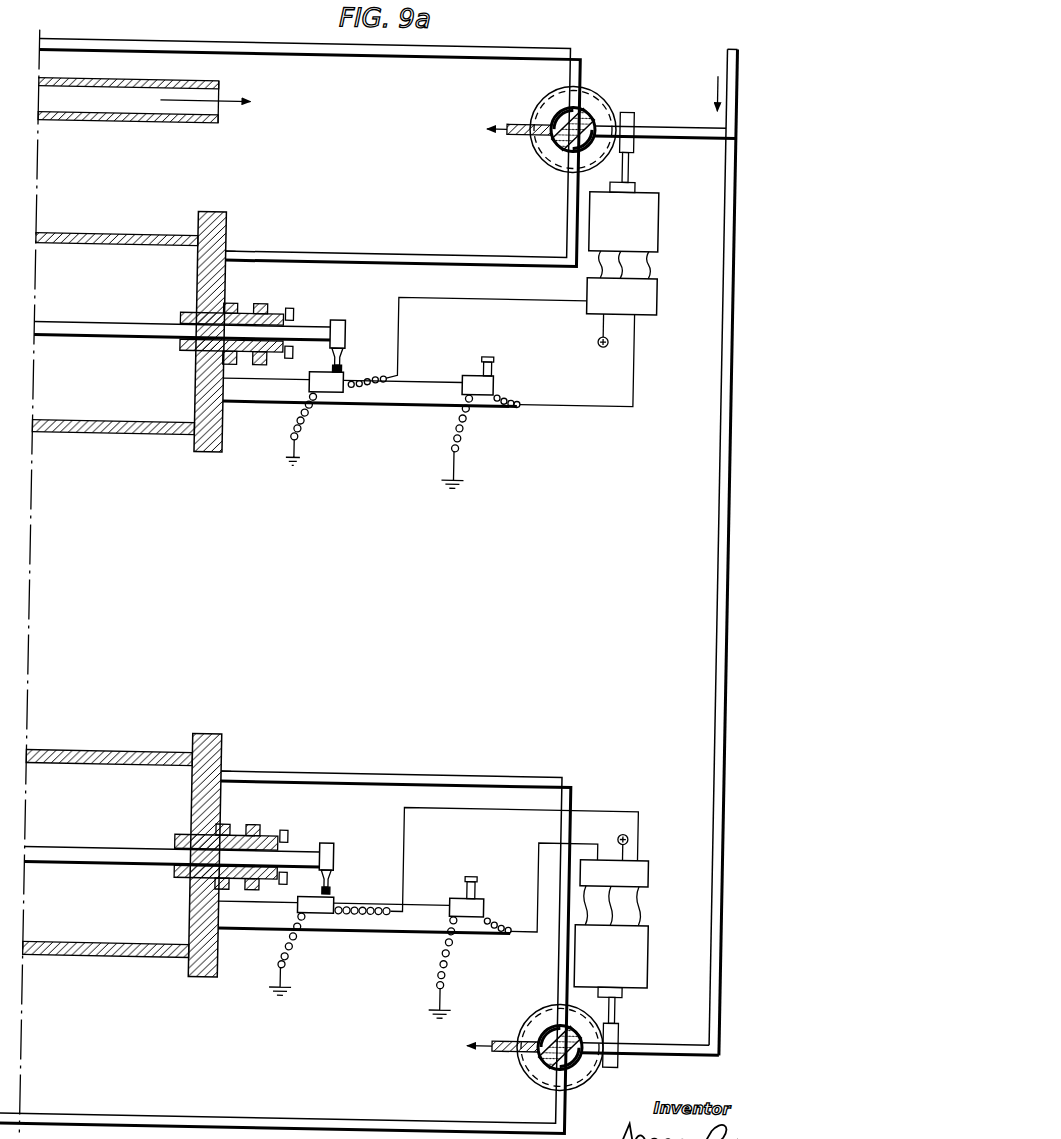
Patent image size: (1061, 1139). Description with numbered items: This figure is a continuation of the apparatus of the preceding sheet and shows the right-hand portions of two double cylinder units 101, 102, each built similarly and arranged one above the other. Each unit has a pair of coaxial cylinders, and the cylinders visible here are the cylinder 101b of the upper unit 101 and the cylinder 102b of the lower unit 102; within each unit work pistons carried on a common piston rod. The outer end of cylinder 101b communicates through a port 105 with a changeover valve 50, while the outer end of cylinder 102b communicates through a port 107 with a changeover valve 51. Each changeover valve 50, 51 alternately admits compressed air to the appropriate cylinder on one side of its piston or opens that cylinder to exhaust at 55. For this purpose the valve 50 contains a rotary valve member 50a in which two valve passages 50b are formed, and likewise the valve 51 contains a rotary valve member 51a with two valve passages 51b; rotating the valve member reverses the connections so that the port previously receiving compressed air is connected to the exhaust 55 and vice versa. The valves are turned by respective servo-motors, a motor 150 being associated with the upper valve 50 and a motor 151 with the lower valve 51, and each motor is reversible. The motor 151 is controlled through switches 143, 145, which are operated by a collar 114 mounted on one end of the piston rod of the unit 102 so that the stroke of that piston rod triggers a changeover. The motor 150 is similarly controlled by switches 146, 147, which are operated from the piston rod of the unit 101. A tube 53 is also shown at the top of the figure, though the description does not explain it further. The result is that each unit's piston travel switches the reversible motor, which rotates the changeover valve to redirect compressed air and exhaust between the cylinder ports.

The inlet tube 53 is at (156, 127).
The double cylinder unit 101 is at (42, 206).
The cylinder 101b is at (74, 332).
The port 105 is at (195, 252).
The switch 146 is at (340, 383).
The switch 147 is at (482, 385).
The servo-motor 150 is at (623, 230).
The changeover valve 50 is at (626, 134).
The rotary valve member 50a is at (582, 112).
The valve passages 50b is at (552, 112).
The exhaust 55 is at (510, 133).
The double cylinder unit 102 is at (45, 724).
The cylinder 102b is at (82, 852).
The port 107 is at (198, 762).
The collar 114 is at (339, 860).
The switch 143 is at (340, 899).
The switch 145 is at (466, 906).
The servo-motor 151 is at (611, 951).
The changeover valve 51 is at (603, 1054).
The rotary valve member 51a is at (583, 1068).
The valve passages 51b is at (548, 1060).